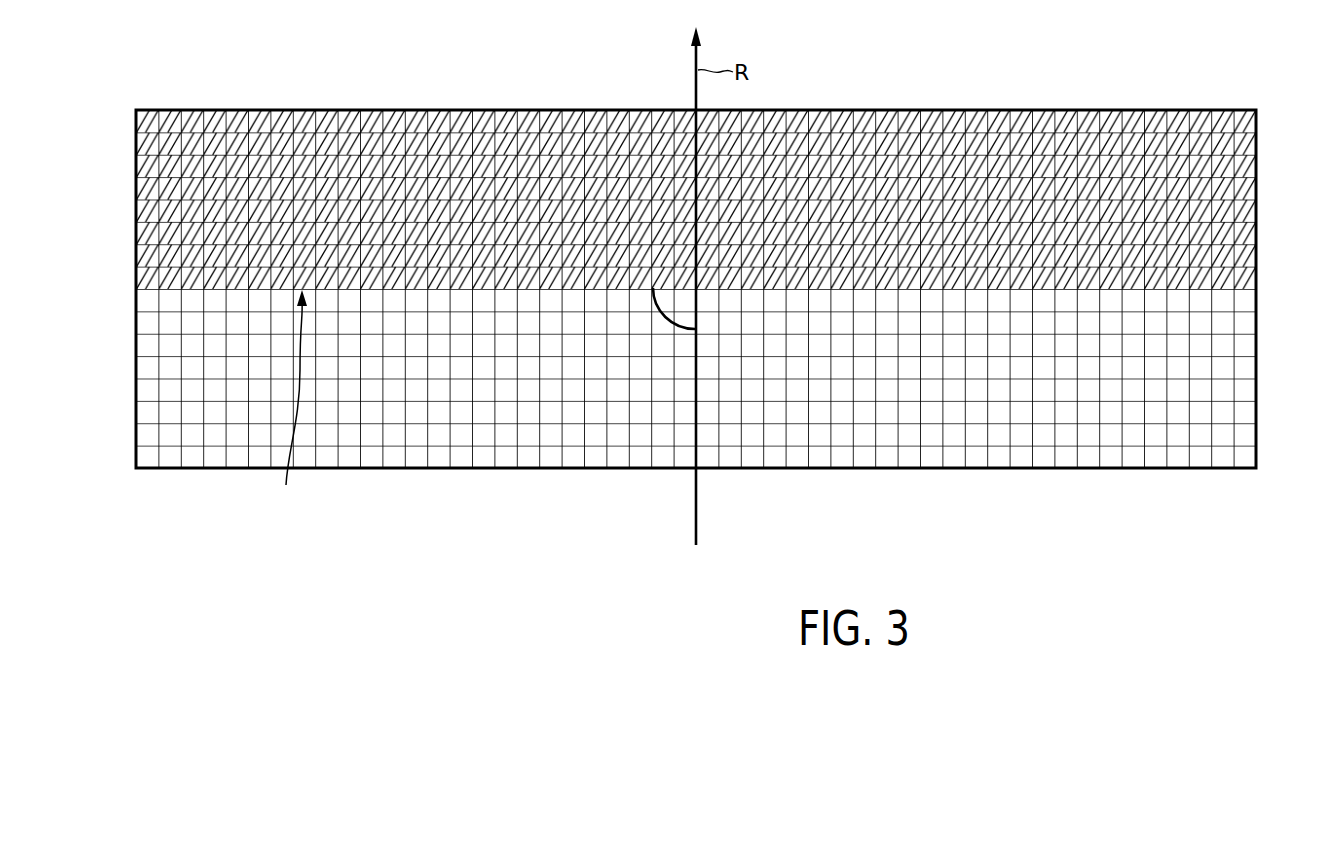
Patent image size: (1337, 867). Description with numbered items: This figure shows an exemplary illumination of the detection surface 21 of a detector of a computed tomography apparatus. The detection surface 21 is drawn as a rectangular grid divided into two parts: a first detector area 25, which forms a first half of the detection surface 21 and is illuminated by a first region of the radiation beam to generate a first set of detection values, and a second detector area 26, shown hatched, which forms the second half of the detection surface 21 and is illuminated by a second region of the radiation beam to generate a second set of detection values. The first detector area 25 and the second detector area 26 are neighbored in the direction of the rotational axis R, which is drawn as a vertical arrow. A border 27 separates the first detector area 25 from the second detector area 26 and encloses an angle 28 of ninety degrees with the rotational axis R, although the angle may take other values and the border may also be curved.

The detection surface 21 is at (1276, 156).
The first detector area 25 is at (116, 382).
The second detector area 26 is at (116, 159).
The border 27 is at (291, 403).
The angle 28 is at (672, 326).